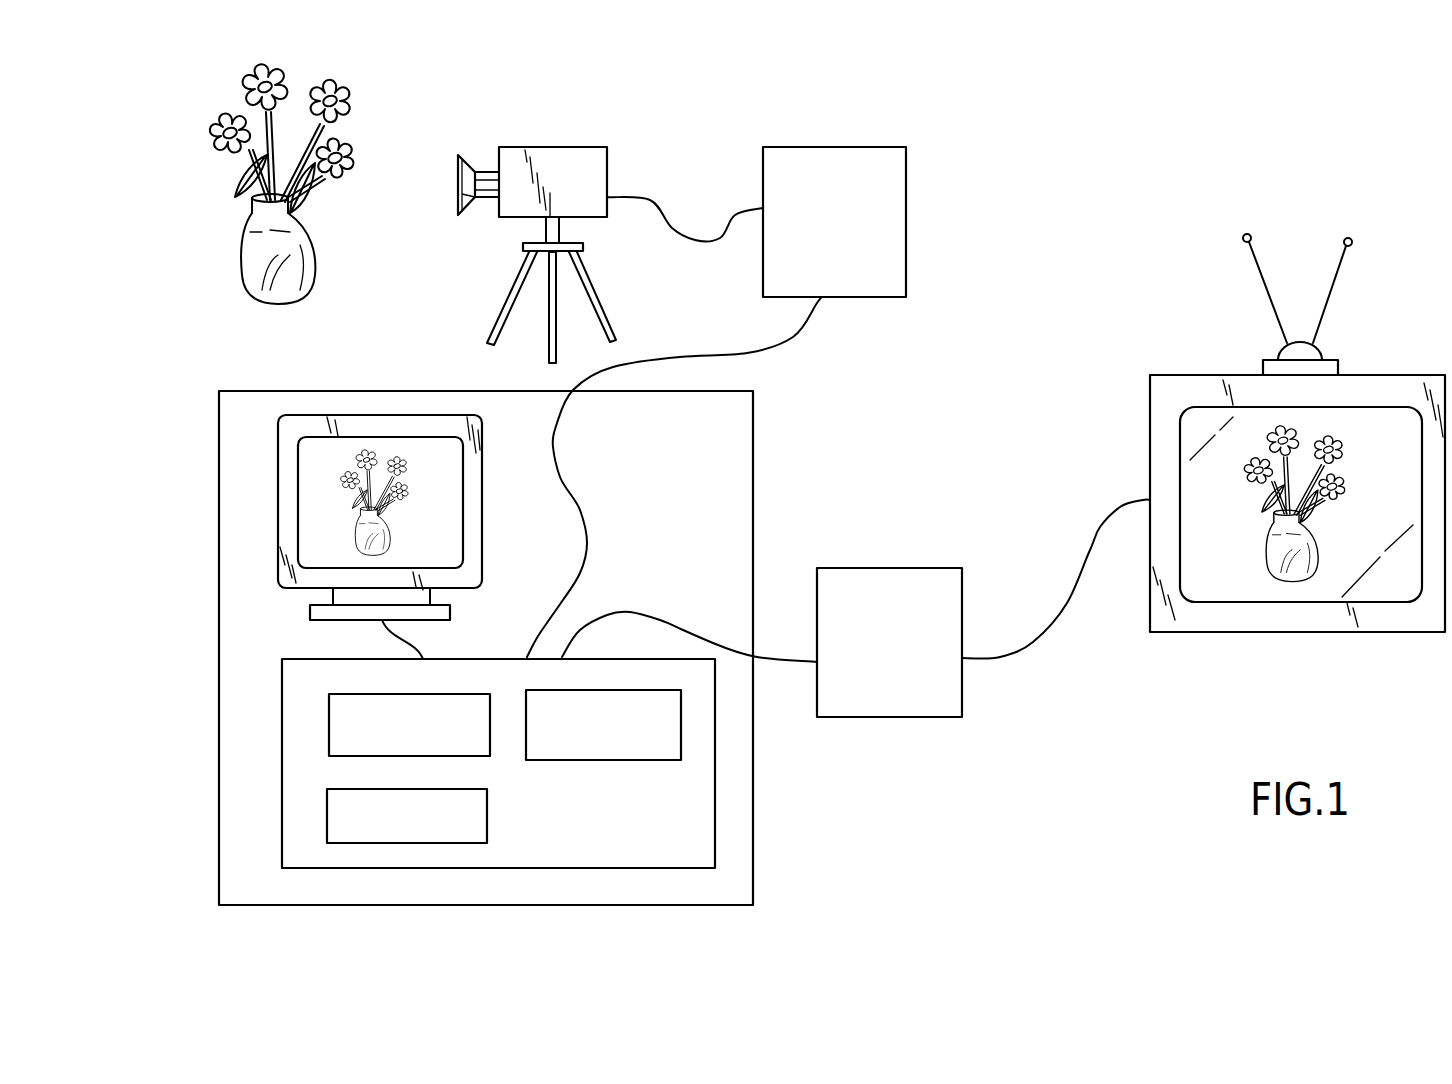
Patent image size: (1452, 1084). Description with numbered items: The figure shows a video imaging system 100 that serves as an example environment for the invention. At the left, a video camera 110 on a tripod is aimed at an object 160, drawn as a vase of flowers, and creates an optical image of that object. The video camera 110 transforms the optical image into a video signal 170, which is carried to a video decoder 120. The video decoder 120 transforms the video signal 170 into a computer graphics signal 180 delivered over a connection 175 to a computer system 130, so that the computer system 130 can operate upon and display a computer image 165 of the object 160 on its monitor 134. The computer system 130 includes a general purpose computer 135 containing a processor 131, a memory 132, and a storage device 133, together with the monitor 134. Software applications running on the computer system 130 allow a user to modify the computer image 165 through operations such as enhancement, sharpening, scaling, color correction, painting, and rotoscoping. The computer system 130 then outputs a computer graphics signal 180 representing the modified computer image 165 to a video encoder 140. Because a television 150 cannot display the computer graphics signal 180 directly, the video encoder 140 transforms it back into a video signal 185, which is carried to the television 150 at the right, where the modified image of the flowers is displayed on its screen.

The video imaging system 100 is at (1009, 762).
The video camera 110 is at (568, 147).
The video decoder 120 is at (828, 147).
The computer system 130 is at (407, 417).
The processor 131 is at (329, 722).
The memory 132 is at (327, 818).
The storage device 133 is at (587, 760).
The monitor 134 is at (483, 526).
The general purpose computer 135 is at (483, 657).
The video encoder 140 is at (900, 568).
The television 150 is at (1177, 375).
The object 160 is at (240, 245).
The computer image 165 is at (357, 540).
The video signal 170 is at (697, 240).
The decoder to computer connection 175 is at (800, 338).
The computer graphics signal 180 is at (683, 633).
The video signal 185 is at (1037, 638).